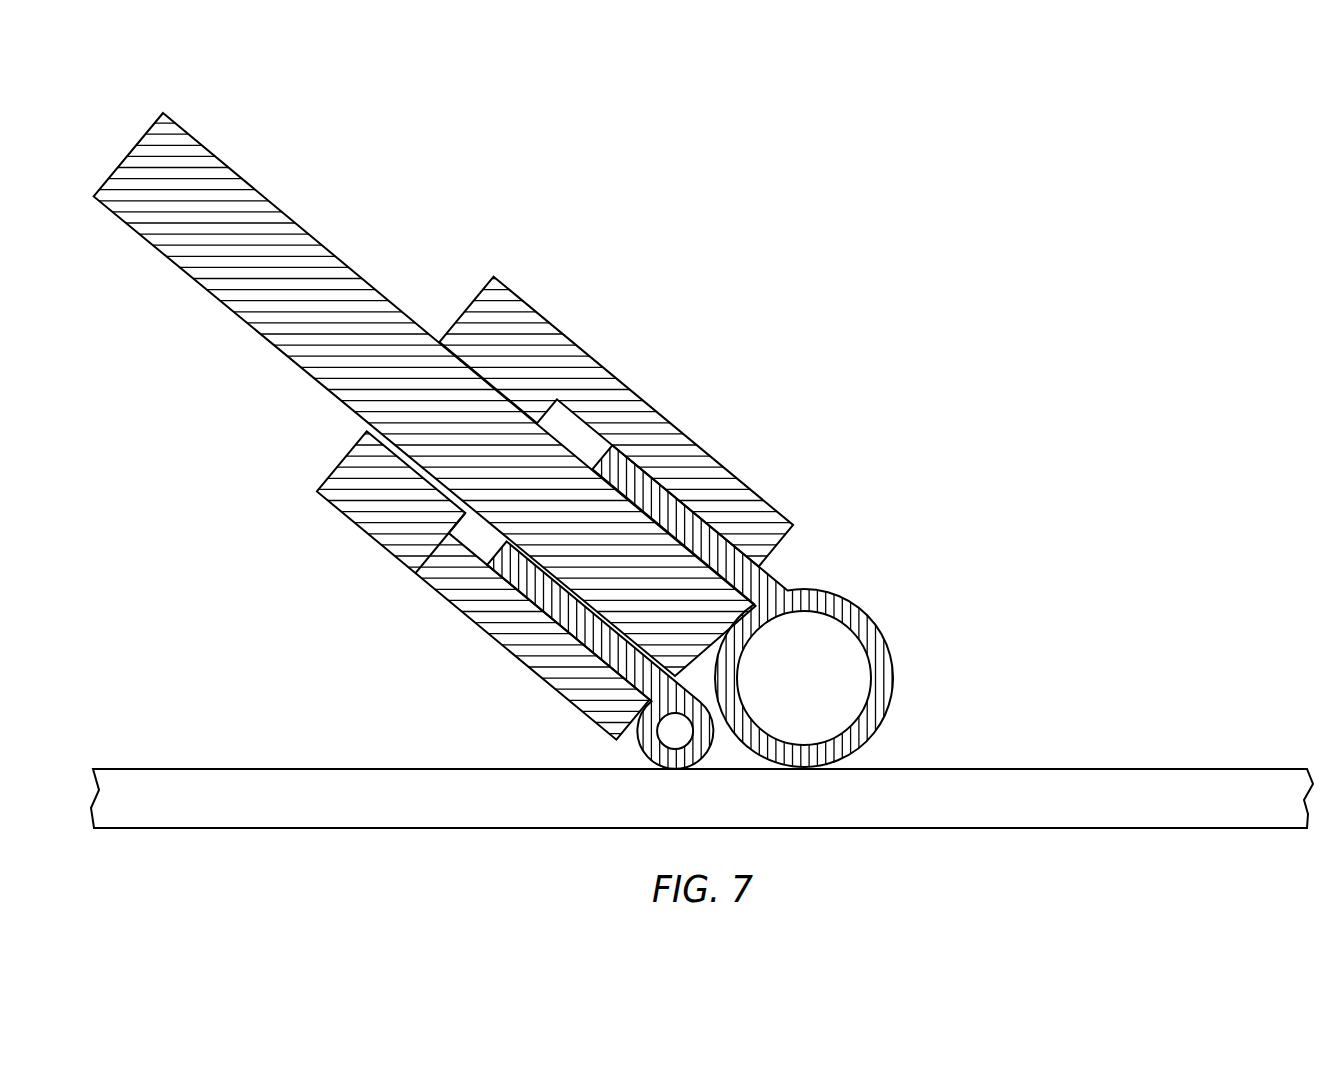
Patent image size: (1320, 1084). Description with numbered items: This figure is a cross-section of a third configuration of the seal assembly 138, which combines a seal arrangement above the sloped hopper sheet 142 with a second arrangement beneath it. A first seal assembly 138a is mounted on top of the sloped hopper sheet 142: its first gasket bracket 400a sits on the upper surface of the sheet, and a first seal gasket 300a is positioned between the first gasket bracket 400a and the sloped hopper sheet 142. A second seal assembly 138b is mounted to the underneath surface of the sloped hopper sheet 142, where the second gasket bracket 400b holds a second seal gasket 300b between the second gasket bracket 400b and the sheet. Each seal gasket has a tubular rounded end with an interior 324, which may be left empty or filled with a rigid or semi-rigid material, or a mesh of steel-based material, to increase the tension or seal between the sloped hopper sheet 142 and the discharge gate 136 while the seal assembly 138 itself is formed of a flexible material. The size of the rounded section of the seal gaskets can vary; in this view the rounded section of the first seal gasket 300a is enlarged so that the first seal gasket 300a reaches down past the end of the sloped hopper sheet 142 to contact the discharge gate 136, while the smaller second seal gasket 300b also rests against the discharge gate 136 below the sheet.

The discharge gate 136 is at (340, 828).
The seal assembly 138 is at (520, 452).
The first seal assembly 138a is at (520, 443).
The second seal assembly 138b is at (486, 461).
The sloped hopper sheet 142 is at (208, 291).
The first seal gasket 300a is at (886, 632).
The second seal gasket 300b is at (645, 756).
The interior 324 is at (820, 694).
The first gasket bracket 400a is at (600, 363).
The second gasket bracket 400b is at (376, 541).